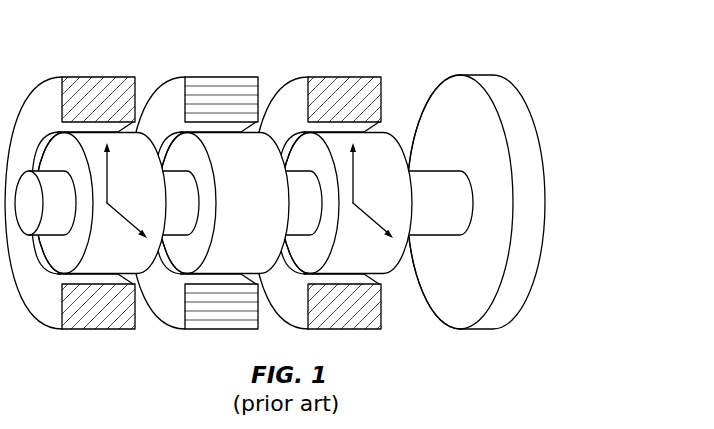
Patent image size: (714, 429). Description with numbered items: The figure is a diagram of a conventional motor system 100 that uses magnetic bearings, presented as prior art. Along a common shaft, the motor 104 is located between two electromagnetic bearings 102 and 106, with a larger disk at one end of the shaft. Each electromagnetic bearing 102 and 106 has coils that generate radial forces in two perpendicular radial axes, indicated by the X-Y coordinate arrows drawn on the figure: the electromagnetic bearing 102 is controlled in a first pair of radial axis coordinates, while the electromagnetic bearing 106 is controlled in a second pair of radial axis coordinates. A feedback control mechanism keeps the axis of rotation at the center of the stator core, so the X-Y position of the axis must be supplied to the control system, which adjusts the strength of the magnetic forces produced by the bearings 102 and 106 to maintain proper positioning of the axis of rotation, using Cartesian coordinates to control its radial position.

The conventional motor system 100 is at (610, 78).
The electromagnetic bearing 102 is at (97, 58).
The motor 104 is at (220, 58).
The electromagnetic bearing 106 is at (343, 58).